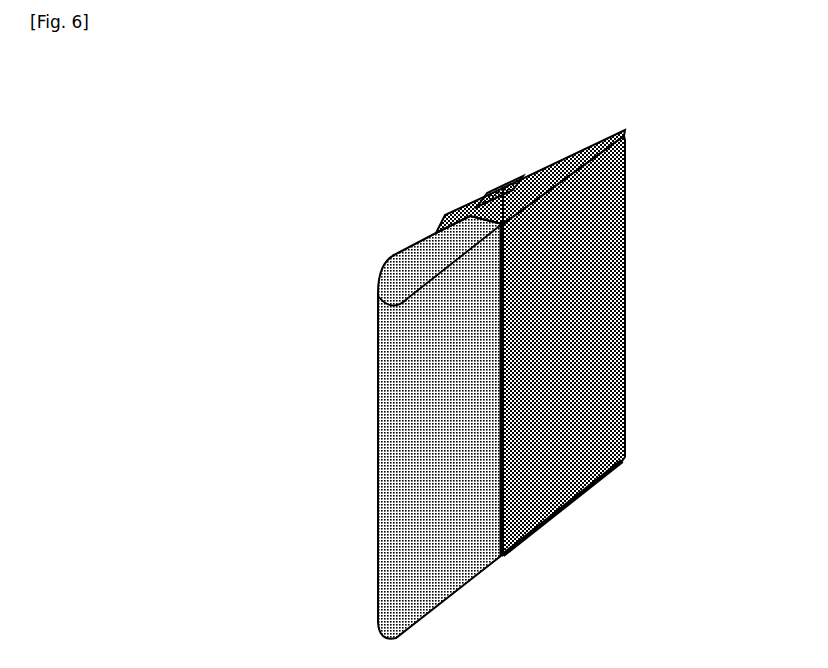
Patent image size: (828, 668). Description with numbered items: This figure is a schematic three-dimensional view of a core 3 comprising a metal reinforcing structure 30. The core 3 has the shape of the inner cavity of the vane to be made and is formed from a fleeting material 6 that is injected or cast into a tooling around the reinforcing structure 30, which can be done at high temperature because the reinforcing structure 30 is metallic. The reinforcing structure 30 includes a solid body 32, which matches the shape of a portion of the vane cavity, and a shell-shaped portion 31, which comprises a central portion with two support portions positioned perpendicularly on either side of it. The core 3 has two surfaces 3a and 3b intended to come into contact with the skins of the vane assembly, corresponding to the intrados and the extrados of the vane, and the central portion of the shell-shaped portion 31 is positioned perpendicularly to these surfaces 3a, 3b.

The core 3 is at (482, 368).
The surface of the core 3a is at (433, 528).
The surface of the core 3b is at (495, 190).
The fleeting material 6 is at (403, 430).
The reinforcing structure 30 is at (580, 300).
The shell-shaped portion 31 is at (452, 212).
The solid body 32 is at (552, 170).